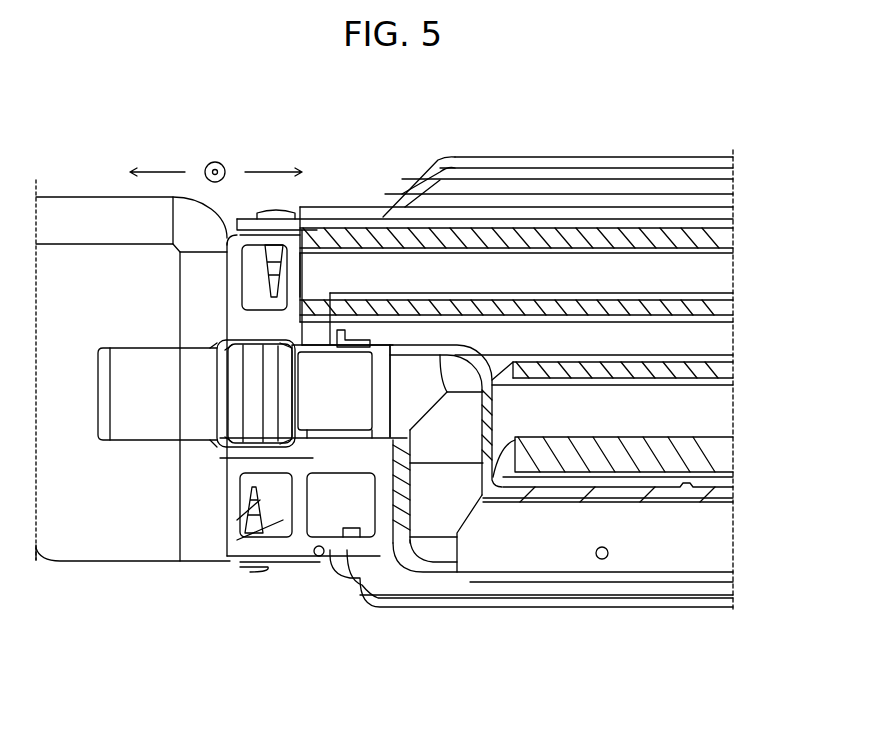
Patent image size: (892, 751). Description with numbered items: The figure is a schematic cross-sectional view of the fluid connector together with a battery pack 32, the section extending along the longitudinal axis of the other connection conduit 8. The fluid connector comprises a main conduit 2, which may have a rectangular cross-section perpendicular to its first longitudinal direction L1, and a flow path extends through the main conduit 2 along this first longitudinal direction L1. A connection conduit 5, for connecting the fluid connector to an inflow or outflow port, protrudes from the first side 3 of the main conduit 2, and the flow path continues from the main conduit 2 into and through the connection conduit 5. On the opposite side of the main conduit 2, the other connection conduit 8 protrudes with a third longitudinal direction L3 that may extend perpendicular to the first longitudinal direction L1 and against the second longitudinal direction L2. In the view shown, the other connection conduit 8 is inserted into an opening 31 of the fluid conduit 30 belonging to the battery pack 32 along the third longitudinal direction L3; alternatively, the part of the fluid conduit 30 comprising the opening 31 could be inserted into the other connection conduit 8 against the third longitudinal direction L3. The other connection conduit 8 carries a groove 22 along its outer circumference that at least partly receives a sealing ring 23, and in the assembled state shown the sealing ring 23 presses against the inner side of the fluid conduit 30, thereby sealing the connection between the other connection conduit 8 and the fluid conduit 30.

The first longitudinal direction L1 is at (216, 162).
The second longitudinal direction L2 is at (155, 172).
The third longitudinal direction L3 is at (270, 172).
The main conduit 2 is at (204, 381).
The first side 3 is at (222, 390).
The connection conduit 5 is at (131, 463).
The other connection conduit 8 is at (317, 440).
The groove 22 is at (353, 337).
The sealing ring 23 is at (350, 437).
The fluid conduit 30 is at (443, 583).
The opening 31 is at (329, 405).
The battery pack 32 is at (577, 625).